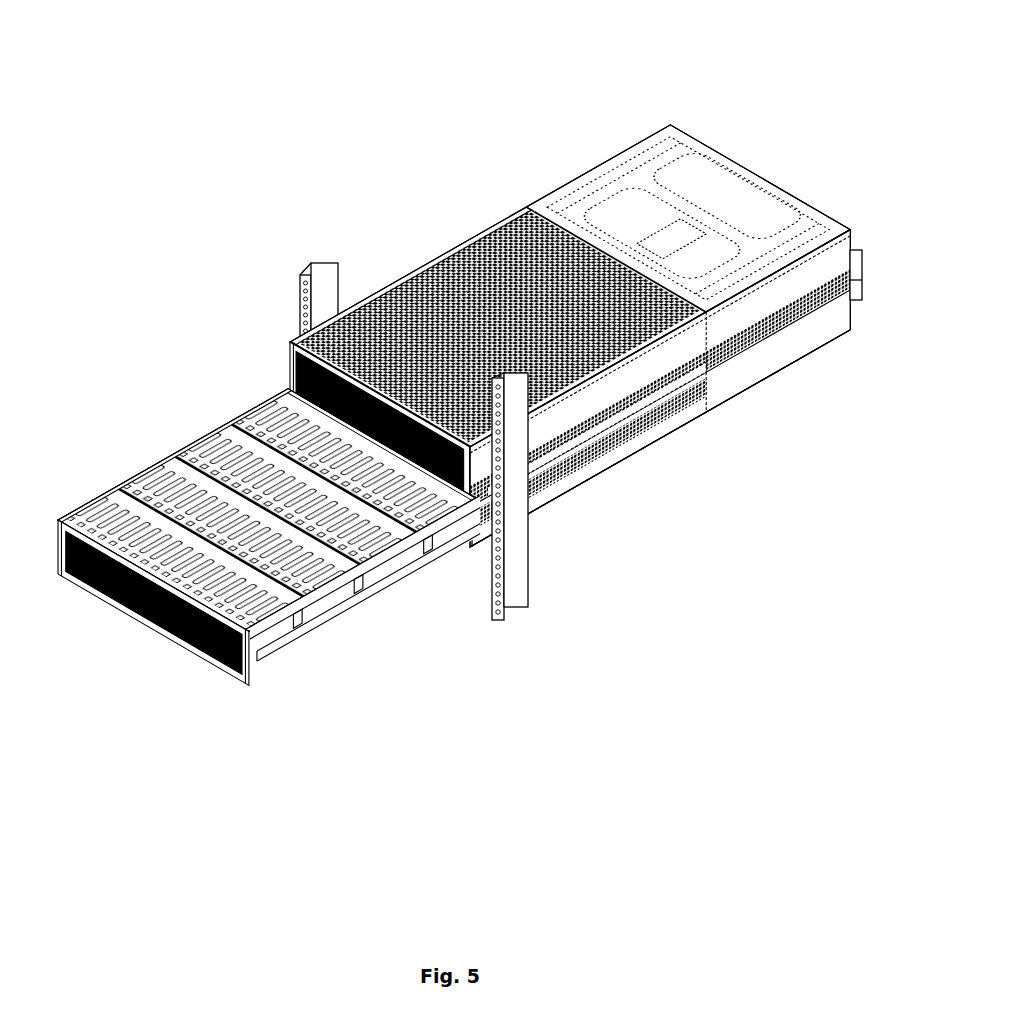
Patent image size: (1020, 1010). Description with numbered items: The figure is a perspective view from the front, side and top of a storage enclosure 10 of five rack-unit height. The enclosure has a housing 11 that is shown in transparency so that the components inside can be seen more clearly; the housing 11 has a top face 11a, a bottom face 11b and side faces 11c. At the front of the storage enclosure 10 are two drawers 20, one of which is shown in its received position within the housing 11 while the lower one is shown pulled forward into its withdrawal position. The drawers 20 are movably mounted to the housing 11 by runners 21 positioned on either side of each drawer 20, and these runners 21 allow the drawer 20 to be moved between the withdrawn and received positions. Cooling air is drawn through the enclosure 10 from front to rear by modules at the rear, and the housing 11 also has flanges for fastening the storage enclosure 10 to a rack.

The storage enclosure 10 is at (273, 152).
The housing 11 is at (633, 458).
The top face 11a is at (683, 98).
The bottom face 11b is at (692, 460).
The side faces 11c is at (455, 223).
The drawers 20 is at (220, 662).
The runners 21 is at (565, 425).